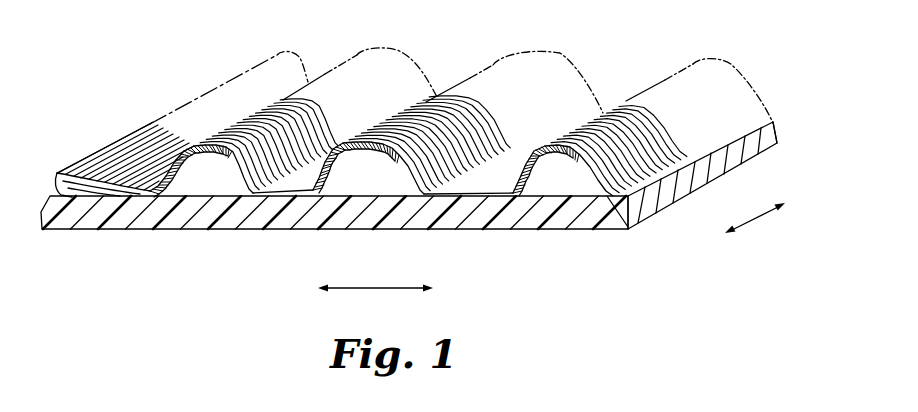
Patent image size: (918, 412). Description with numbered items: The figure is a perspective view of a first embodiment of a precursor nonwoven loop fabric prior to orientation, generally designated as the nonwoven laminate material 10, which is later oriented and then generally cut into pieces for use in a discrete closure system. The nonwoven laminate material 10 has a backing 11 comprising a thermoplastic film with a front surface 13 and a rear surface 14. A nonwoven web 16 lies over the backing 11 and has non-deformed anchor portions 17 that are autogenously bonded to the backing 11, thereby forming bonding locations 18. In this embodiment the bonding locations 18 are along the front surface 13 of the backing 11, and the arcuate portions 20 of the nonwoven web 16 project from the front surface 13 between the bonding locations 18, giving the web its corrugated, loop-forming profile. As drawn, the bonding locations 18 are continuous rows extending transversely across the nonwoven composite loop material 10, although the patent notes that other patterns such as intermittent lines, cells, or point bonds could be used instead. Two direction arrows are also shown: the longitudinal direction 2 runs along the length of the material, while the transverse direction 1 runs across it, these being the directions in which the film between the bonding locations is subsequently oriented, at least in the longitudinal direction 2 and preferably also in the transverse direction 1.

The transverse direction 1 is at (757, 220).
The longitudinal direction 2 is at (377, 290).
The nonwoven laminate material 10 is at (741, 60).
The backing 11 is at (637, 207).
The front surface 13 is at (193, 143).
The rear surface 14 is at (502, 230).
The nonwoven web 16 is at (560, 52).
The anchor portions 17 is at (427, 203).
The bonding locations 18 is at (224, 216).
The arcuate portions 20 is at (227, 146).